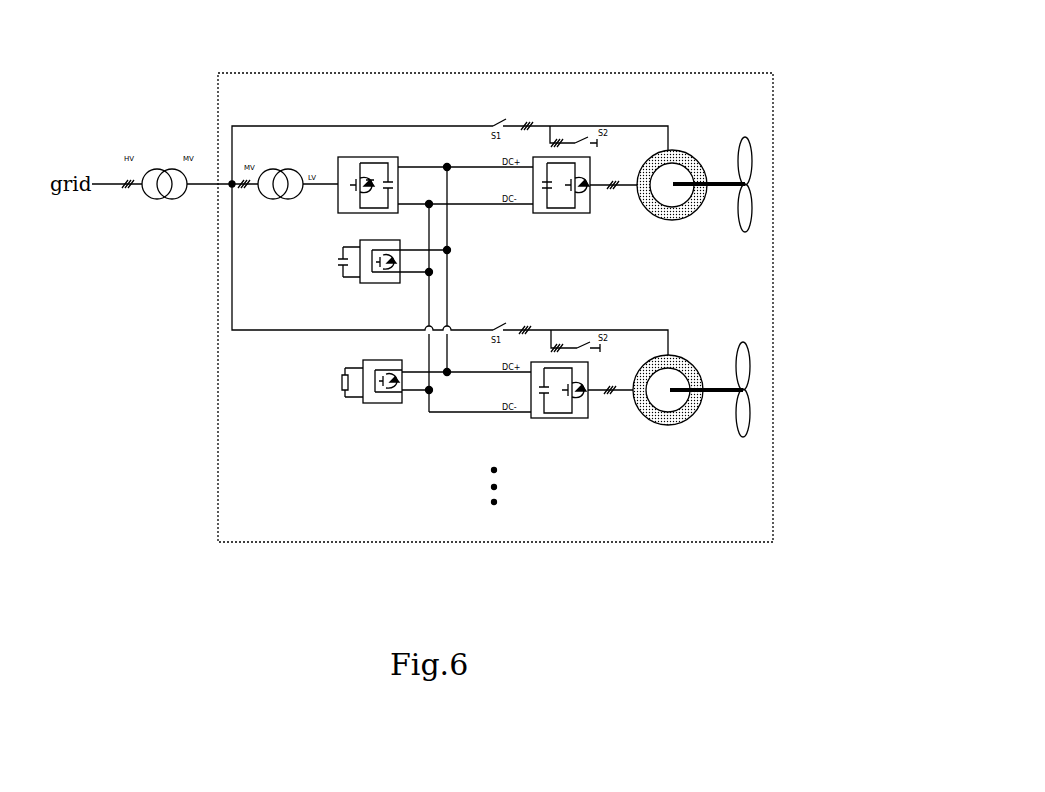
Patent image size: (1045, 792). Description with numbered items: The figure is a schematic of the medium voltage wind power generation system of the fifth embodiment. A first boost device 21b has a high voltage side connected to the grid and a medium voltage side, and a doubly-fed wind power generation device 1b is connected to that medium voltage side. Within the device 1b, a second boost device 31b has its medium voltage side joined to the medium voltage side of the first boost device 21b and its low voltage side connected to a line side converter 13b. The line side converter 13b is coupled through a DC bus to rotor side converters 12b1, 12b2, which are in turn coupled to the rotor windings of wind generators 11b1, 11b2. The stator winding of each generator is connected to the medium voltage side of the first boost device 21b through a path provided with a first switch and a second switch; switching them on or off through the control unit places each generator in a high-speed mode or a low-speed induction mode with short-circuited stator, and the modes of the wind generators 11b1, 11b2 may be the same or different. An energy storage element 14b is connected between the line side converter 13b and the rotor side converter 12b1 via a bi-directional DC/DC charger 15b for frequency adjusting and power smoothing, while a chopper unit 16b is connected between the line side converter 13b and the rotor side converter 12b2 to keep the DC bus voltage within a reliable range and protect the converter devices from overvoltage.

The doubly-fed wind power generation device 1b is at (762, 73).
The first boost device 21b is at (157, 169).
The second boost device 31b is at (288, 169).
The line side converter 13b is at (361, 158).
The rotor side converter 12b1 is at (542, 157).
The rotor side converter 12b2 is at (588, 418).
The wind generator 11b1 is at (695, 157).
The wind generator 11b2 is at (690, 362).
The energy storage element 14b is at (334, 262).
The bi-directional DC/DC charger 15b is at (372, 284).
The chopper unit 16b is at (363, 403).